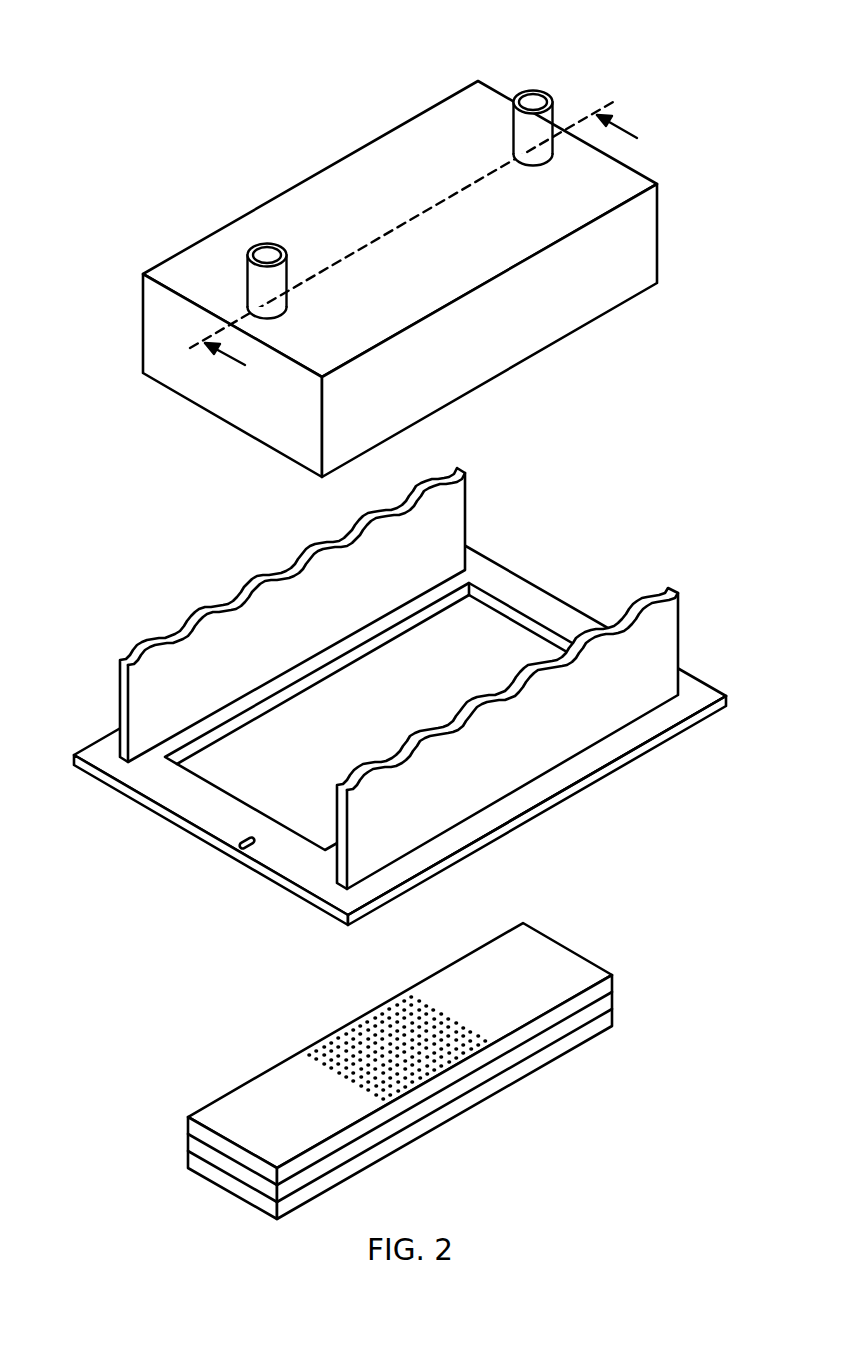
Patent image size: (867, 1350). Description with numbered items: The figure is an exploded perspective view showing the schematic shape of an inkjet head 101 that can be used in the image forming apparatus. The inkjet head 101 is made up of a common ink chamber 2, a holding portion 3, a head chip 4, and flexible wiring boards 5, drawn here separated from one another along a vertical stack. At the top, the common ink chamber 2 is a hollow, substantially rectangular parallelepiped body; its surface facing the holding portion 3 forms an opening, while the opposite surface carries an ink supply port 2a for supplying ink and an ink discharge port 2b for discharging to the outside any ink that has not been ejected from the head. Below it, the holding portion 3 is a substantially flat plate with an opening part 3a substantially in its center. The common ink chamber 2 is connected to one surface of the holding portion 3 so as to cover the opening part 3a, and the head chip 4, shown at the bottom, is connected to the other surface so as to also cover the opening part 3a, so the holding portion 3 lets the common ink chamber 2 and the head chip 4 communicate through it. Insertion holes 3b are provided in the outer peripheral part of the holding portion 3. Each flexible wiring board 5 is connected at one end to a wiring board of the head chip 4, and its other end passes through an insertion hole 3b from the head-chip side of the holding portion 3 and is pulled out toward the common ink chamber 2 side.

The inkjet head 101 is at (193, 25).
The common ink chamber 2 is at (483, 108).
The ink supply port 2a is at (247, 251).
The ink discharge port 2b is at (537, 98).
The holding portion 3 is at (400, 726).
The opening part 3a is at (493, 635).
The insertion hole 3b is at (642, 723).
The head chip 4 is at (595, 944).
The flexible wiring board 5 is at (308, 594).